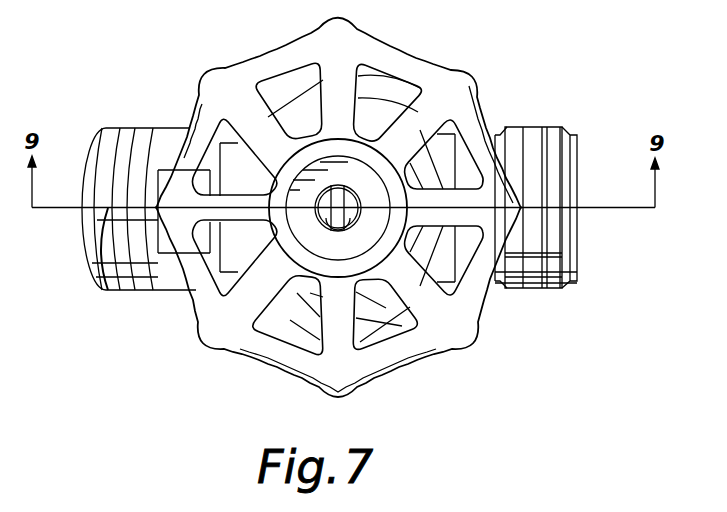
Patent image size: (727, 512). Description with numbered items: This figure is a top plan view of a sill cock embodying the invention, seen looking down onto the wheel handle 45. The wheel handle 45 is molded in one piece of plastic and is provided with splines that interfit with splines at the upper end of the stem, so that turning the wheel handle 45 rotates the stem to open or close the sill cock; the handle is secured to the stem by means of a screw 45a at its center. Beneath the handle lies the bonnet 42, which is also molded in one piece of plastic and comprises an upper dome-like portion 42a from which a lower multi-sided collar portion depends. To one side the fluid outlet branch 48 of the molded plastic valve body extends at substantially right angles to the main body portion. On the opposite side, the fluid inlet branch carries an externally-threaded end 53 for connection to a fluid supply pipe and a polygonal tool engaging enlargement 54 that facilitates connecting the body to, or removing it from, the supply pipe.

The bonnet 42 is at (304, 115).
The upper dome-like portion 42a is at (287, 300).
The wheel handle 45 is at (447, 350).
The screw 45a is at (350, 187).
The fluid outlet branch 48 is at (490, 135).
The externally-threaded end 53 is at (138, 292).
The polygonal tool engaging enlargement 54 is at (190, 290).